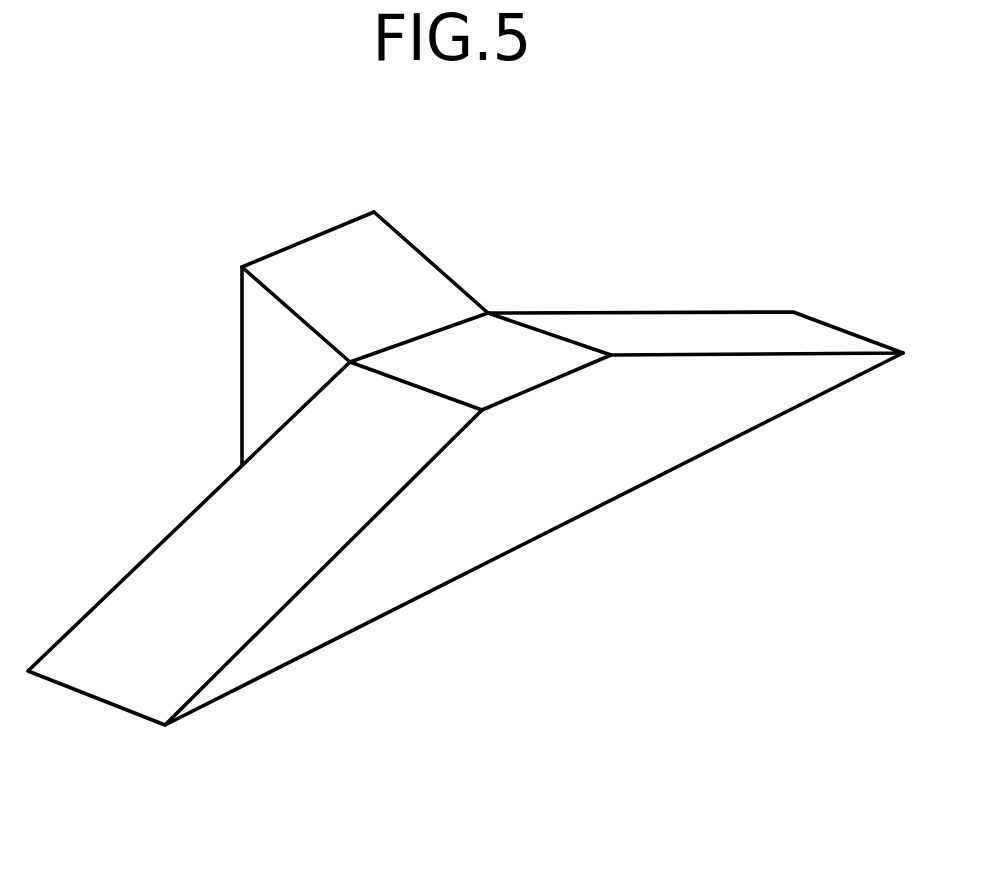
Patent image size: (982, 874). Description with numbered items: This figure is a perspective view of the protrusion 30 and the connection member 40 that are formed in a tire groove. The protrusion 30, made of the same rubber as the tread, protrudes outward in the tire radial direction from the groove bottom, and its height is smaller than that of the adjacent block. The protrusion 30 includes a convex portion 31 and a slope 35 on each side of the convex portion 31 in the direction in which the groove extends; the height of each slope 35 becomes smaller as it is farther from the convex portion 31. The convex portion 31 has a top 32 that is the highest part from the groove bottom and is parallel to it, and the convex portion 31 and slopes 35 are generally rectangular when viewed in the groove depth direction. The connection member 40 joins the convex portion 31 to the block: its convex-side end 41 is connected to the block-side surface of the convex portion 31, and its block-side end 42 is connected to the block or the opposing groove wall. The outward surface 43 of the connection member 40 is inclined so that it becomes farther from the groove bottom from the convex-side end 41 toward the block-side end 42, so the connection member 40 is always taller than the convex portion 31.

The protrusion 30 is at (553, 483).
The convex portion 31 is at (497, 320).
The top 32 is at (517, 347).
The slope 35 is at (735, 322).
The connection member 40 is at (257, 360).
The convex-side end 41 is at (428, 328).
The block-side end 42 is at (322, 230).
The outward surface 43 is at (382, 255).